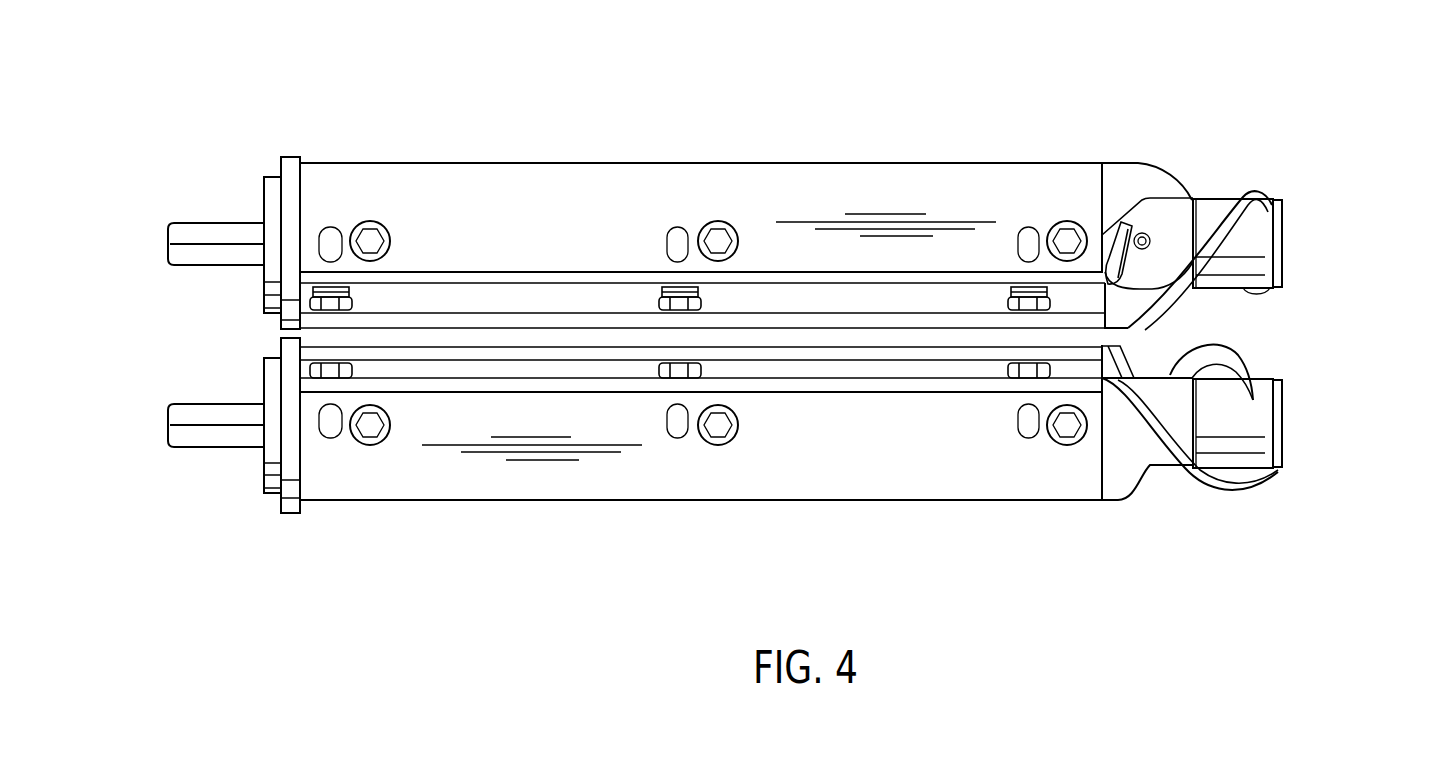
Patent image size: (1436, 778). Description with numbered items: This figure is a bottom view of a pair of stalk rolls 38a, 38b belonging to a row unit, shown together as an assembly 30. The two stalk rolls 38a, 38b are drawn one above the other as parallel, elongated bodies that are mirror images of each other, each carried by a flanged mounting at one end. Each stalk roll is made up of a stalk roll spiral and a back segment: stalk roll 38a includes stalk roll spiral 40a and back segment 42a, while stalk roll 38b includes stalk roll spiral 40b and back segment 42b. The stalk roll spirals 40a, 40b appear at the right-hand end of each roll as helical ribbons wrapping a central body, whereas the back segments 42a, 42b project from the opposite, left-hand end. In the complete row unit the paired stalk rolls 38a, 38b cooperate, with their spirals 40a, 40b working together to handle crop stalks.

The clamp assembly 30 is at (791, 329).
The stalk roll 38a is at (782, 192).
The stalk roll 38b is at (791, 471).
The stalk roll spiral 40a is at (1212, 197).
The stalk roll spiral 40b is at (1262, 378).
The back segment 42a is at (340, 163).
The back segment 42b is at (337, 502).